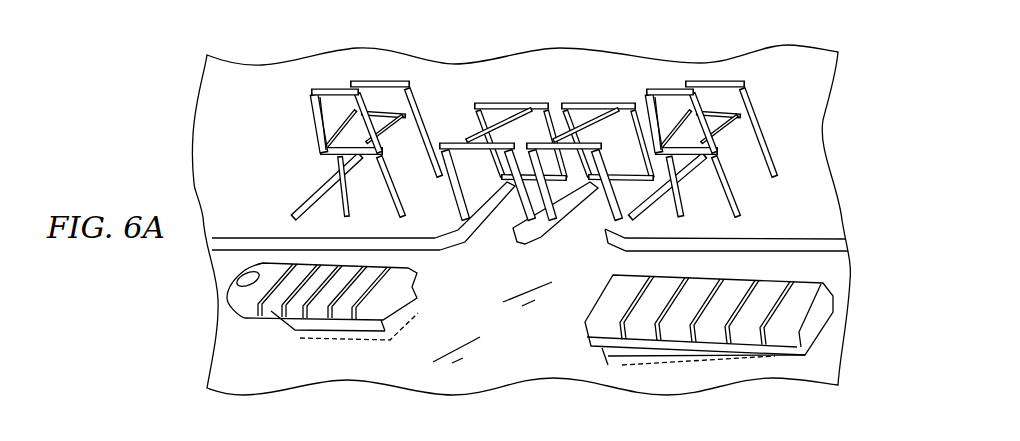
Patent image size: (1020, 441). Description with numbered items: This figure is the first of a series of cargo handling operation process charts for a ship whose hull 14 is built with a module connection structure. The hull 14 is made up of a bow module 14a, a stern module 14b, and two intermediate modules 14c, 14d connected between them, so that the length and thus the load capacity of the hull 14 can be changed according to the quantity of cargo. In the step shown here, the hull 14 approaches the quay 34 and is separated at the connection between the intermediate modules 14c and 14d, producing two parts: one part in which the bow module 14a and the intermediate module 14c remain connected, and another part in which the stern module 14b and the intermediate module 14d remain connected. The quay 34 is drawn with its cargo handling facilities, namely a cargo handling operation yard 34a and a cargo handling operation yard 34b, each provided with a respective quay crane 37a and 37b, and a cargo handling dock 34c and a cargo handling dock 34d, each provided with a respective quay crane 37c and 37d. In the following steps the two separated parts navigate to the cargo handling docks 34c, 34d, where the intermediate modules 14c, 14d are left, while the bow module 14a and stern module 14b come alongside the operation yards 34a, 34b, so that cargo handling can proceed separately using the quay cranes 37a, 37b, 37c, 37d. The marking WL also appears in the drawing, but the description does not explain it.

The hull 14 is at (234, 250).
The bow module 14a is at (269, 320).
The stern module 14b is at (752, 355).
The intermediate module 14c is at (358, 315).
The intermediate module 14d is at (621, 357).
The quay 34 is at (767, 80).
The cargo handling operation yard 34a is at (274, 225).
The cargo handling operation yard 34b is at (797, 214).
The cargo handling dock 34c is at (507, 216).
The cargo handling dock 34d is at (592, 216).
The quay crane 37a is at (330, 128).
The quay crane 37b is at (668, 93).
The quay crane 37c is at (502, 102).
The quay crane 37d is at (597, 101).
The wire loop WL is at (423, 345).